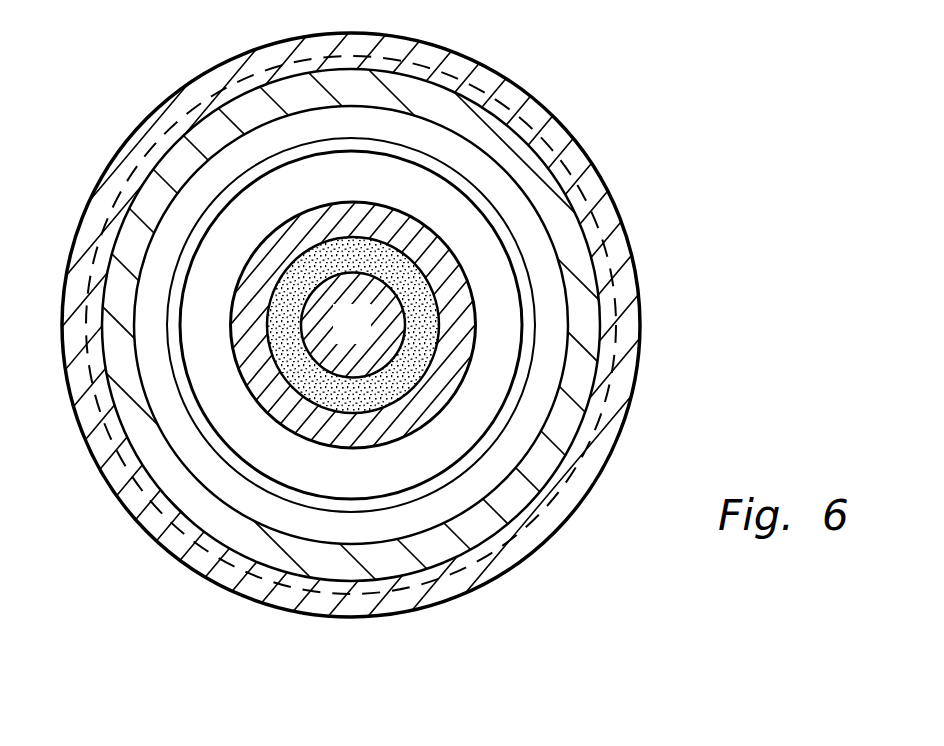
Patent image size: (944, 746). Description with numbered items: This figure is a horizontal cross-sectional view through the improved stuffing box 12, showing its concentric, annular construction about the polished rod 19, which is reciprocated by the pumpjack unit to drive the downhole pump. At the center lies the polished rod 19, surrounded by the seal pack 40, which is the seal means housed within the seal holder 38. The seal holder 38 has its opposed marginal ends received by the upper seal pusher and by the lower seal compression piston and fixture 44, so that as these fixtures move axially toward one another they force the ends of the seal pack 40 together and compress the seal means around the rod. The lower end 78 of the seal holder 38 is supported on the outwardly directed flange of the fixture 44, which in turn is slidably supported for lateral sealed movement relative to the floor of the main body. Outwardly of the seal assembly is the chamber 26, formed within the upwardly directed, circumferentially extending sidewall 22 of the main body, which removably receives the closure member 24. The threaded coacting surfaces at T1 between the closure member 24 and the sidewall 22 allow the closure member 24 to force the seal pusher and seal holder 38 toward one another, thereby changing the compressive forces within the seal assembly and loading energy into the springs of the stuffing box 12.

The stuffing box 12 is at (670, 68).
The closure member 24 is at (629, 189).
The threaded coacting surfaces T1 is at (607, 233).
The chamber 26 is at (507, 184).
The seal holder 38 is at (489, 299).
The seal pack 40 is at (402, 267).
The polished rod 19 is at (364, 340).
The sidewall 22 is at (553, 360).
The lower seal compression piston and fixture 44 is at (536, 421).
The lower end of seal holder 78 is at (482, 498).